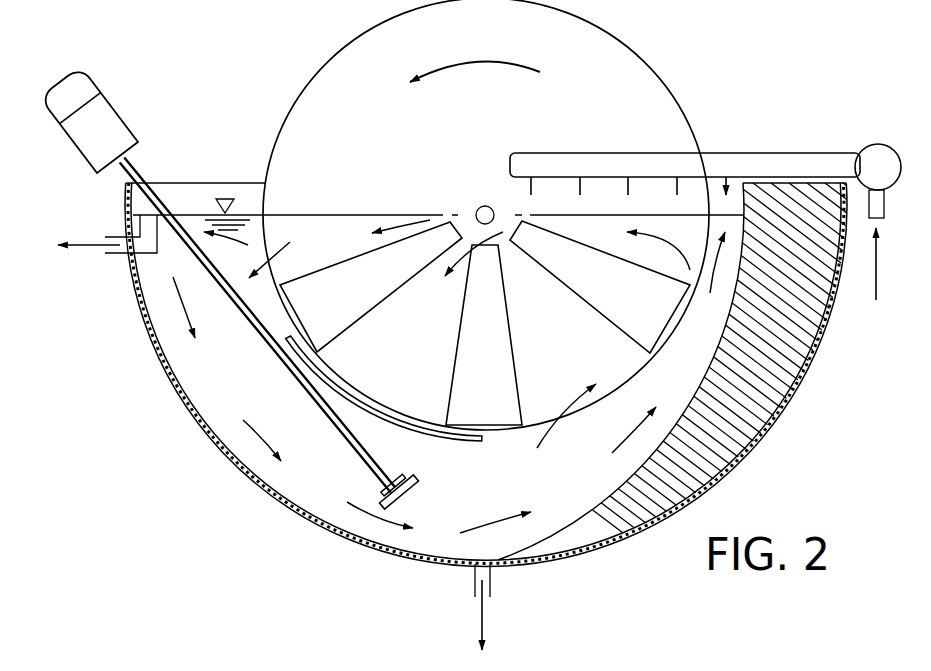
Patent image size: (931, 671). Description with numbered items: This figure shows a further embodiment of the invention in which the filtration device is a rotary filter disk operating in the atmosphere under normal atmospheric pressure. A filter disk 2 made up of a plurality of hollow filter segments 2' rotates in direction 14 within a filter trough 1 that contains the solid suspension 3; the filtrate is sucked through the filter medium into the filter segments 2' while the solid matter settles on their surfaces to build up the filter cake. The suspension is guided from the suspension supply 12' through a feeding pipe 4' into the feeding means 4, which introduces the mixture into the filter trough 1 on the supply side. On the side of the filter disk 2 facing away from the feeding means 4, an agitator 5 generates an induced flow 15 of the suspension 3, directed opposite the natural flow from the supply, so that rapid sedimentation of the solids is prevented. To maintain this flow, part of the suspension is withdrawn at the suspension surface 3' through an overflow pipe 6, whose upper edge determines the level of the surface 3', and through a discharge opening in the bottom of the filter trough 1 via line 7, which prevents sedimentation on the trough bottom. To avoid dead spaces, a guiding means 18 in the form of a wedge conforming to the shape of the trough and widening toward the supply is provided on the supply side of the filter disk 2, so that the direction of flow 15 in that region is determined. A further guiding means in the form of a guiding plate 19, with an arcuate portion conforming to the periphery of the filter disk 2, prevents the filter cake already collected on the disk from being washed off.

The filter trough 1 is at (393, 557).
The filter disk 2 is at (438, 215).
The filter segments 2' is at (485, 323).
The solid suspension 3 is at (483, 371).
The suspension surface 3' is at (198, 169).
The feeding means 4 is at (685, 135).
The feeding pipe 4' is at (873, 148).
The agitator 5 is at (262, 340).
The overflow pipe 6 is at (130, 246).
The line 7 is at (492, 578).
The suspension supply 12' is at (883, 276).
The direction of rotation 14 is at (488, 62).
The induced flow 15 is at (282, 232).
The guiding means 18 is at (788, 386).
The guiding plate 19 is at (375, 420).